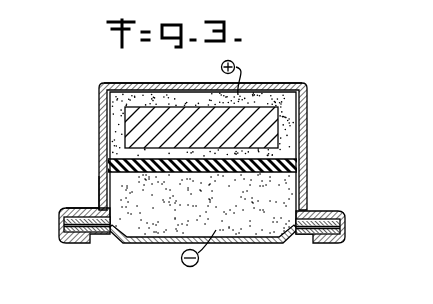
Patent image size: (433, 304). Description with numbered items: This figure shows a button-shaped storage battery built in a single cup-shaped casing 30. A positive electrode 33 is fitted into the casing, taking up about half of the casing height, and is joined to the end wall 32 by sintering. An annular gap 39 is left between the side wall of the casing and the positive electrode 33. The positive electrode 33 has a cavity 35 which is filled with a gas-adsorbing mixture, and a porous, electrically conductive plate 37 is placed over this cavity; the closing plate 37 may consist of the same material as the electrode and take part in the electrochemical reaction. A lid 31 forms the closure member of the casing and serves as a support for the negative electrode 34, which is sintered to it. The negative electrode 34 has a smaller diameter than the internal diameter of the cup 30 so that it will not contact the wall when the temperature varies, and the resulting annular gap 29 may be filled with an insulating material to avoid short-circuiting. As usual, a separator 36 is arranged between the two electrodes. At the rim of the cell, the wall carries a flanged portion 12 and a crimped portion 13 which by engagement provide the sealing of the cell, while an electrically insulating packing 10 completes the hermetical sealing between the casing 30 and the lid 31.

The electrically insulating packing 10 is at (102, 244).
The flanged portion 12 is at (59, 232).
The crimped portion 13 is at (62, 216).
The annular gap 29 is at (99, 183).
The cup-shaped casing 30 is at (99, 103).
The lid 31 is at (240, 244).
The end wall 32 is at (280, 64).
The positive electrode 33 is at (156, 97).
The negative electrode 34 is at (149, 218).
The cavity 35 is at (197, 116).
The separator 36 is at (178, 166).
The porous, electrically conductive plate 37 is at (242, 153).
The annular gap 39 is at (108, 128).